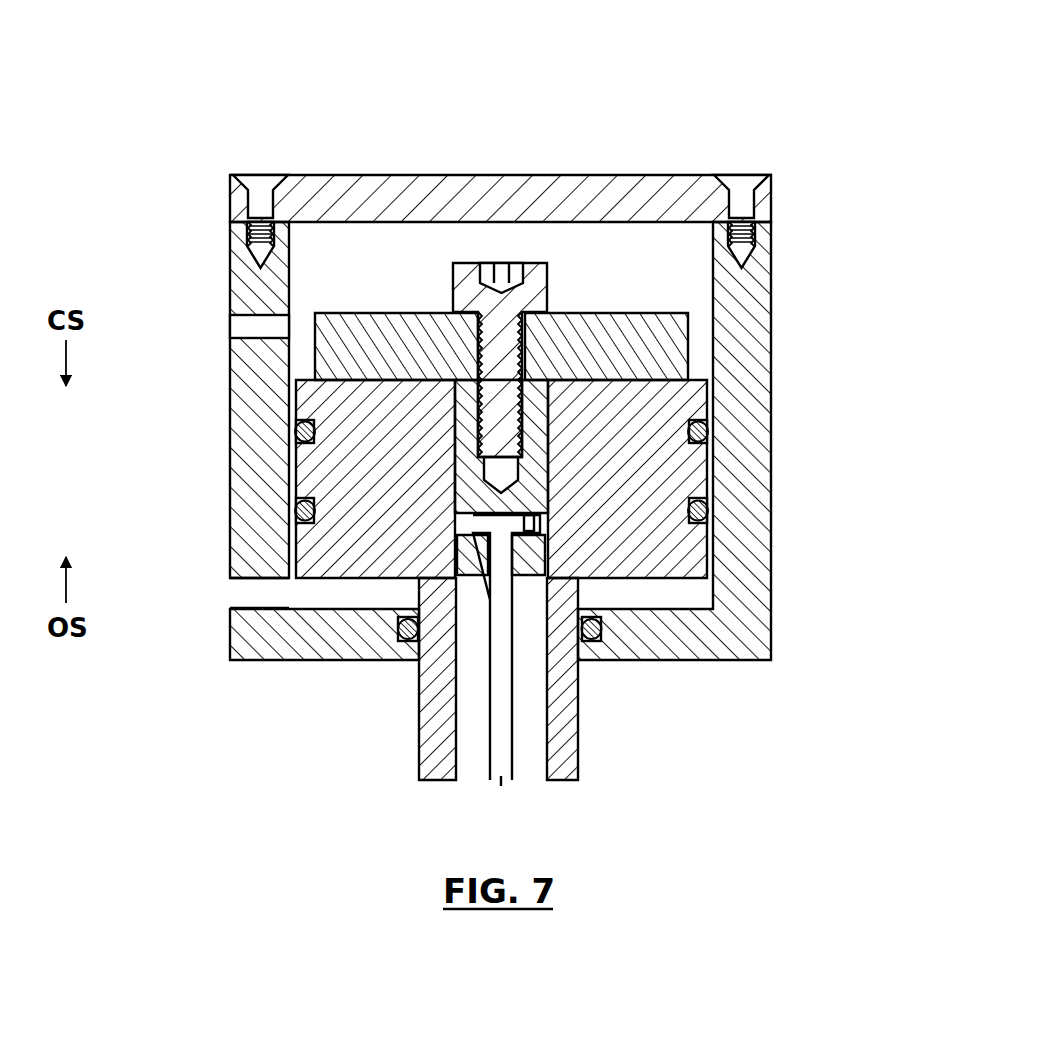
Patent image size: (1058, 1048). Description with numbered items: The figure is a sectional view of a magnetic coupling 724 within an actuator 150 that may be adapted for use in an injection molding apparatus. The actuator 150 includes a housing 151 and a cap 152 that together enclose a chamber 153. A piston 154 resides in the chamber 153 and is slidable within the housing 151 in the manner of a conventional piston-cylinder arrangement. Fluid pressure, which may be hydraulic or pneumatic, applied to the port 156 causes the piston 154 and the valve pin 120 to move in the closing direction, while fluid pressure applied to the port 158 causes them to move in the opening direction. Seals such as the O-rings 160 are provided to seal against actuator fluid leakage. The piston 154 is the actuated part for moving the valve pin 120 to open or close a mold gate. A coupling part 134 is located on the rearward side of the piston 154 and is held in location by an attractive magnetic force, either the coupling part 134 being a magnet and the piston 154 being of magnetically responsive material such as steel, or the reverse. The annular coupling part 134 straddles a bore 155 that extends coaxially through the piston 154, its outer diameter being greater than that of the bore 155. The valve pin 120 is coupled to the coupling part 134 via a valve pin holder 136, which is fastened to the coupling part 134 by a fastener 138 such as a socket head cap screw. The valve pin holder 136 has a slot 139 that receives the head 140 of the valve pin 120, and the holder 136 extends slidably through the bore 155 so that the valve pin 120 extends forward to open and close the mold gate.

The actuator 150 is at (818, 180).
The housing 151 is at (754, 516).
The cap 152 is at (676, 192).
The chamber 153 is at (394, 261).
The piston 154 is at (688, 547).
The bore 155 is at (476, 633).
The port 156 is at (230, 326).
The port 158 is at (230, 595).
The O-rings 160 is at (694, 432).
The coupling part 134 is at (665, 345).
The valve pin holder 136 is at (462, 548).
The fastener 138 is at (526, 300).
The slot 139 is at (536, 524).
The head 140 is at (524, 536).
The valve pin 120 is at (502, 735).
The magnetic coupling 724 is at (340, 272).